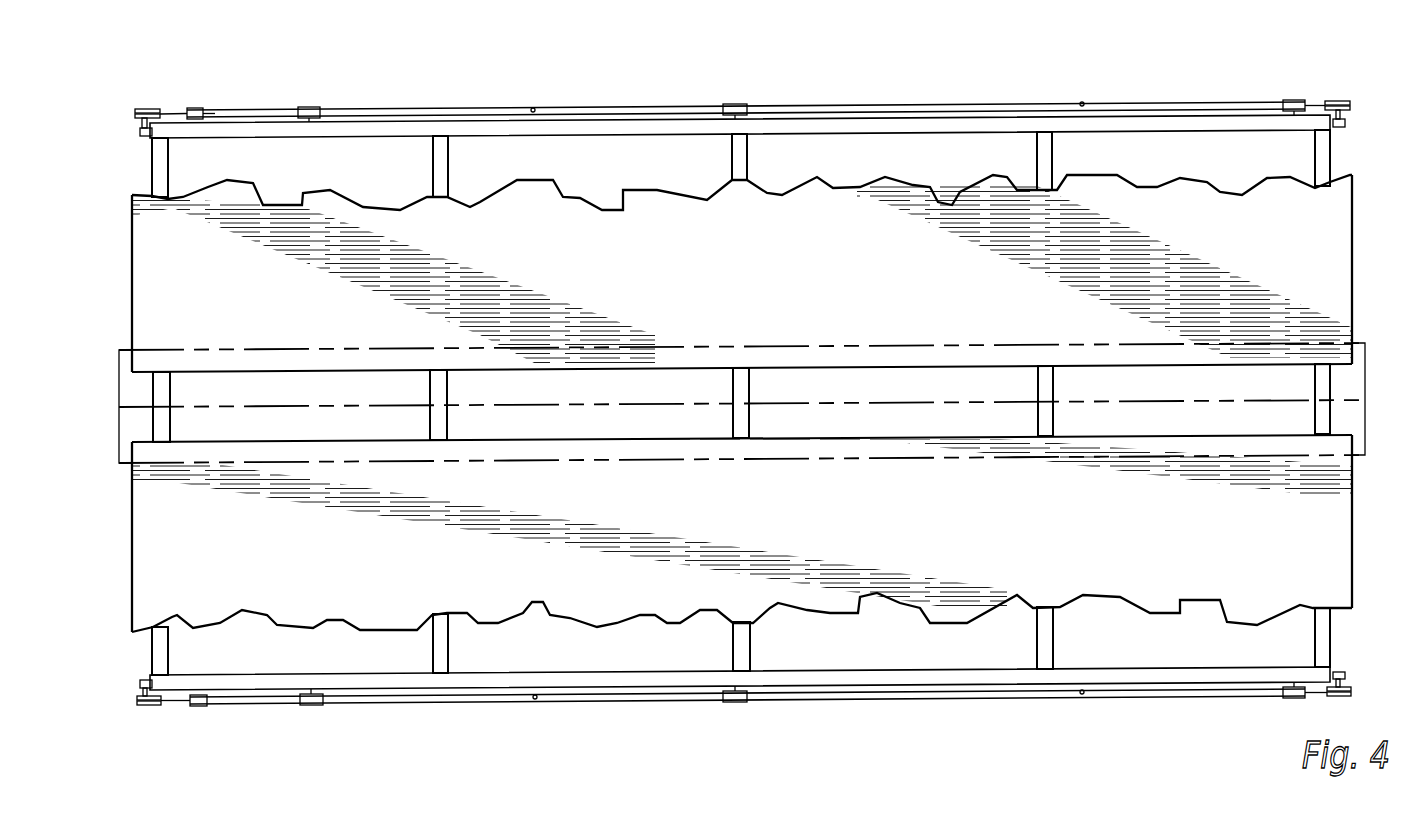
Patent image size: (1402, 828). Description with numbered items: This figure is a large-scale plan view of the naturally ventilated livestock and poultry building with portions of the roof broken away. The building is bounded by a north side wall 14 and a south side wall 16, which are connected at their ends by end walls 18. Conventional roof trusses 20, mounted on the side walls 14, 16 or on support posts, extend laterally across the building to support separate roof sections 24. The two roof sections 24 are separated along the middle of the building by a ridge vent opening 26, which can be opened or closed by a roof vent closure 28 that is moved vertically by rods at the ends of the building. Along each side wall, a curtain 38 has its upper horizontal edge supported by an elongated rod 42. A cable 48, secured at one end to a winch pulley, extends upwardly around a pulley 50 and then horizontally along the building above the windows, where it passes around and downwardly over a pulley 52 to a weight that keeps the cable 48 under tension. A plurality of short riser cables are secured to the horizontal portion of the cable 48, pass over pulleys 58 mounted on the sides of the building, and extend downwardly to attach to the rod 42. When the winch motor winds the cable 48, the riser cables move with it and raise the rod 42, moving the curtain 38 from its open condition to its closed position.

The north side wall 14 is at (357, 128).
The south side wall 16 is at (226, 684).
The end walls 18 is at (158, 160).
The roof trusses 20 is at (449, 156).
The roof sections 24 is at (762, 292).
The ridge vent opening 26 is at (818, 352).
The roof vent closure 28 is at (866, 343).
The curtain 38 is at (203, 108).
The elongated rod 42 is at (191, 108).
The cable 48 is at (912, 103).
The pulley 50 is at (1339, 101).
The pulley 52 is at (148, 108).
The pulleys 58 is at (312, 106).